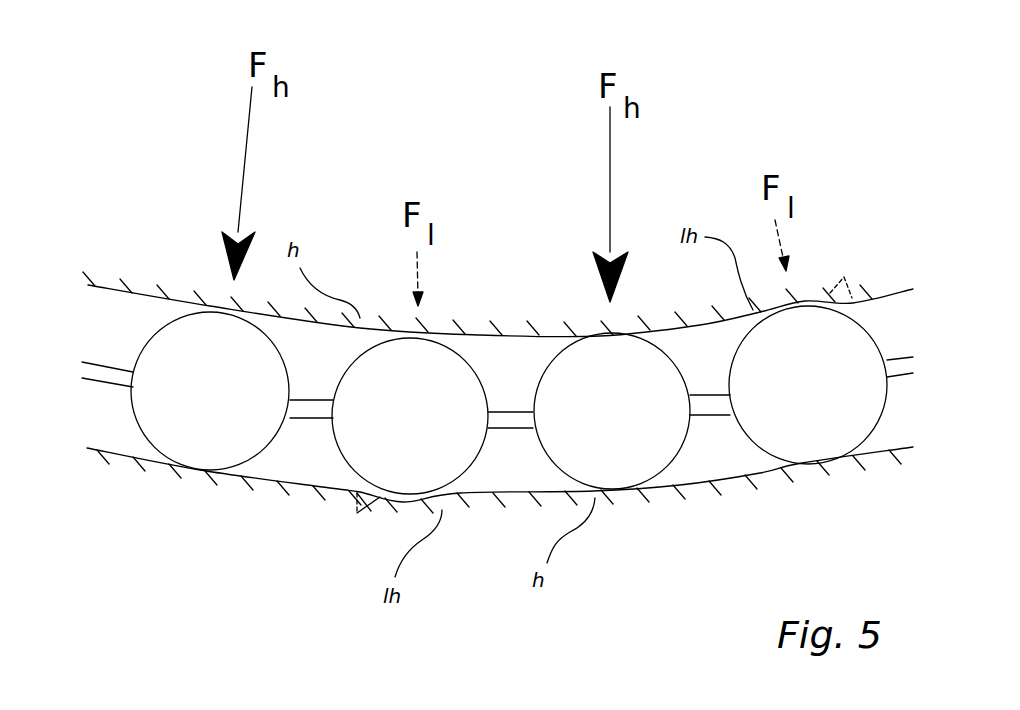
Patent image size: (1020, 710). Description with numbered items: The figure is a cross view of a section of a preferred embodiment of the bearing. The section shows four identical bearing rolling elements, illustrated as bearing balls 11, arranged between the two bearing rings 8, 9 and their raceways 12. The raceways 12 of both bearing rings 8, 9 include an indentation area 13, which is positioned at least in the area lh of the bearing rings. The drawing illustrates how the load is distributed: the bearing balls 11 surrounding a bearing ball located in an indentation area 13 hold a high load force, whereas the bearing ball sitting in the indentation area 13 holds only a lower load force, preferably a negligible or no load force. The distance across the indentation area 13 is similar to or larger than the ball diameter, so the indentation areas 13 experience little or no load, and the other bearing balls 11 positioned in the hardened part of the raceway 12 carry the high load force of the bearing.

The bearing ring 8 is at (155, 290).
The bearing ring 9 is at (160, 467).
The bearing ball 11 is at (180, 360).
The raceway 12 is at (717, 457).
The indentation area 13 is at (377, 500).